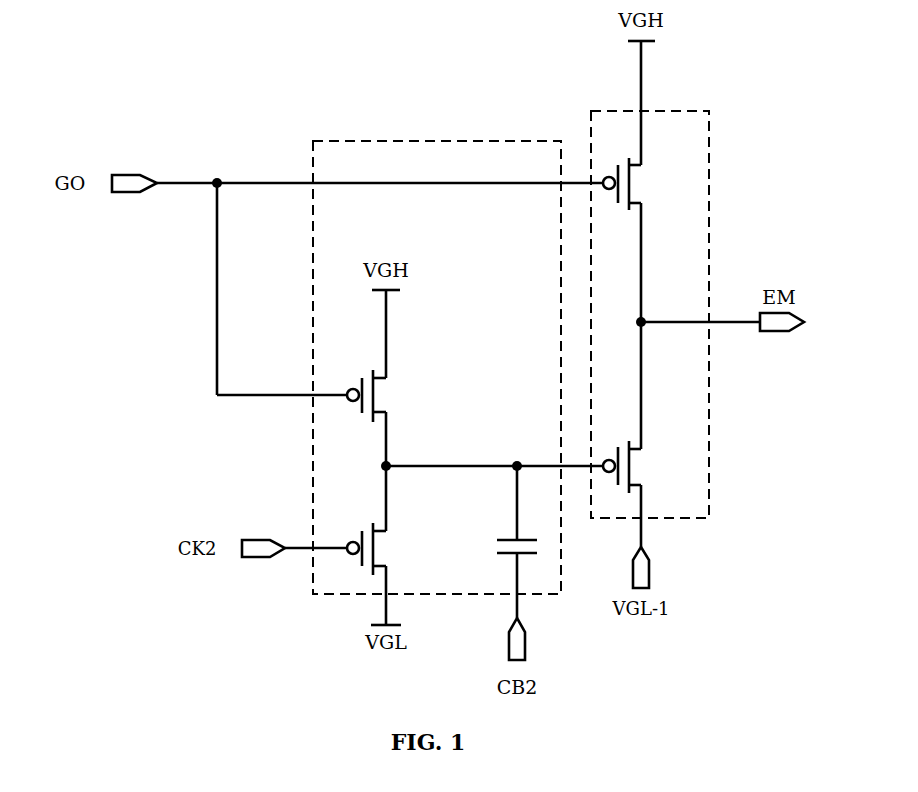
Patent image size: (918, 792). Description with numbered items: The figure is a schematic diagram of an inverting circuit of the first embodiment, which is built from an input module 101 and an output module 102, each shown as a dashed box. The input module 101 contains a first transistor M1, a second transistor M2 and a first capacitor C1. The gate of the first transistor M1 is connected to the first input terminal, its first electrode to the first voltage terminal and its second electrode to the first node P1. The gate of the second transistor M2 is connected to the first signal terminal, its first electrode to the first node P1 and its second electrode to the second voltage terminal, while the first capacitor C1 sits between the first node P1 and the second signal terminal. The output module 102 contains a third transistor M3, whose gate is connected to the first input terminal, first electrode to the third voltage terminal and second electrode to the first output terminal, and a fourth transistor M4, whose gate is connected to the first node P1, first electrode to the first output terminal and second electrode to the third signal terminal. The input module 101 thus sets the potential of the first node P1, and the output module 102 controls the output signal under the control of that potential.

The input module 101 is at (440, 165).
The output module 102 is at (676, 218).
The first transistor M1 is at (389, 396).
The second transistor M2 is at (389, 549).
The third transistor M3 is at (650, 184).
The fourth transistor M4 is at (650, 467).
The first capacitor C1 is at (510, 530).
The first node P1 is at (514, 453).